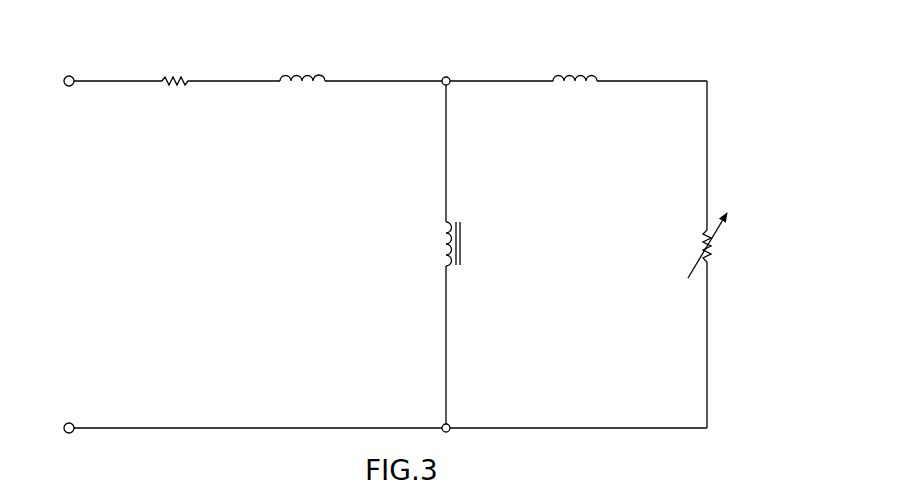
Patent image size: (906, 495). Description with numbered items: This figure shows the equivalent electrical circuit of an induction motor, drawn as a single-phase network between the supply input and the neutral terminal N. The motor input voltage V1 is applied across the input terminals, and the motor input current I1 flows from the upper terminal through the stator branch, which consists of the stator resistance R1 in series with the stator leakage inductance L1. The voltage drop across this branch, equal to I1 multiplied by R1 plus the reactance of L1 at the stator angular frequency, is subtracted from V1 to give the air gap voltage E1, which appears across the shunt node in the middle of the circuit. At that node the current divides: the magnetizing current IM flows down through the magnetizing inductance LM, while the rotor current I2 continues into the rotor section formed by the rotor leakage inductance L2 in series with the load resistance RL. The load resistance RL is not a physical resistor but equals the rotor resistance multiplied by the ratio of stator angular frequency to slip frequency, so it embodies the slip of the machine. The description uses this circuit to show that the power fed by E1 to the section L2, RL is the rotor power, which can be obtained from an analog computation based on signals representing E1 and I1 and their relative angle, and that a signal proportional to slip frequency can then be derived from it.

The neutral terminal N is at (51, 428).
The stator resistance R1 is at (171, 99).
The stator leakage inductance L1 is at (302, 98).
The rotor leakage inductance L2 is at (575, 99).
The magnetizing inductance LM is at (471, 247).
The load resistance RL is at (825, 249).
The motor input current I1 is at (160, 55).
The rotor current I2 is at (600, 59).
The magnetizing current IM is at (498, 137).
The air gap voltage E1 is at (393, 190).
The motor input voltage V1 is at (45, 207).